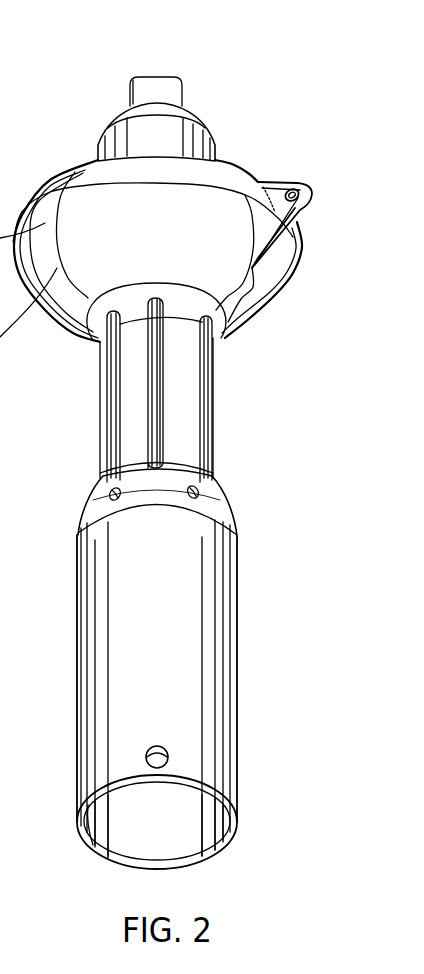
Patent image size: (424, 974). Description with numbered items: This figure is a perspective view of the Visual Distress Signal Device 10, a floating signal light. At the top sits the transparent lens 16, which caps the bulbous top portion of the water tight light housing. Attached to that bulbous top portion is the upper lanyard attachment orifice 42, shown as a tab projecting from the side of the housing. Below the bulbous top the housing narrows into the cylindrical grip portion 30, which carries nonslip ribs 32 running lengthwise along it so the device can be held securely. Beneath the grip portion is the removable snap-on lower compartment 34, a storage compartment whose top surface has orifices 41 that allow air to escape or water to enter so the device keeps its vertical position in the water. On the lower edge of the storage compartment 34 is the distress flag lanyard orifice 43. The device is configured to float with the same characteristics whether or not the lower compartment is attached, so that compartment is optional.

The Visual Distress Signal Device 10 is at (63, 116).
The transparent lens 16 is at (164, 89).
The upper lanyard attachment orifice 42 is at (279, 183).
The cylindrical grip portion 30 is at (135, 370).
The nonslip ribs 32 is at (207, 421).
The orifices 41 is at (103, 492).
The removable snap-on lower compartment 34 is at (118, 653).
The distress flag lanyard orifice 43 is at (158, 747).